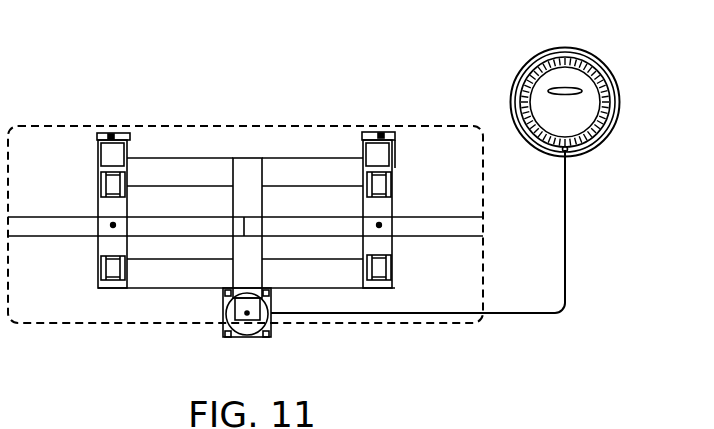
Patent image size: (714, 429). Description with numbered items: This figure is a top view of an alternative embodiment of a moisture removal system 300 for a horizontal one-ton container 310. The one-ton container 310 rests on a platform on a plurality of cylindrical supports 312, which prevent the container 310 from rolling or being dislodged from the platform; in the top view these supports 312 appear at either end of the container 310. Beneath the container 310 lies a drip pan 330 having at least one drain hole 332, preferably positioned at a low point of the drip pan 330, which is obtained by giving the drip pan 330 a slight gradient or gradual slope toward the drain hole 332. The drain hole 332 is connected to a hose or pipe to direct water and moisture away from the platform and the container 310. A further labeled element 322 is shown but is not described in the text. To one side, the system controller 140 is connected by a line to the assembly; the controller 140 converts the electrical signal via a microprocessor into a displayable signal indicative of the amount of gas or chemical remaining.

The moisture removal system 300 is at (403, 55).
The one-ton container 310 is at (478, 321).
The cylindrical supports 312 is at (98, 185).
The first shaft bearing 322 is at (113, 225).
The drip pan 330 is at (312, 236).
The drain hole 332 is at (379, 225).
The system controller 140 is at (614, 151).